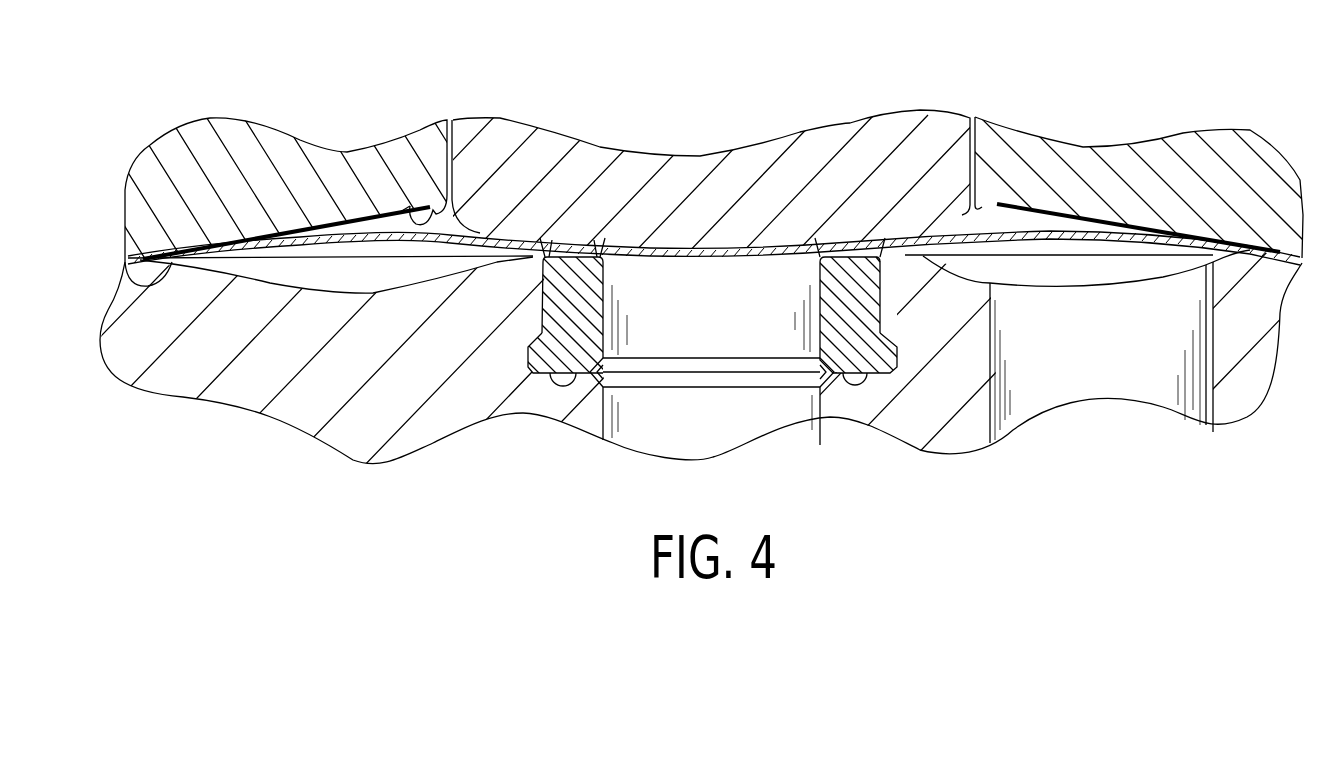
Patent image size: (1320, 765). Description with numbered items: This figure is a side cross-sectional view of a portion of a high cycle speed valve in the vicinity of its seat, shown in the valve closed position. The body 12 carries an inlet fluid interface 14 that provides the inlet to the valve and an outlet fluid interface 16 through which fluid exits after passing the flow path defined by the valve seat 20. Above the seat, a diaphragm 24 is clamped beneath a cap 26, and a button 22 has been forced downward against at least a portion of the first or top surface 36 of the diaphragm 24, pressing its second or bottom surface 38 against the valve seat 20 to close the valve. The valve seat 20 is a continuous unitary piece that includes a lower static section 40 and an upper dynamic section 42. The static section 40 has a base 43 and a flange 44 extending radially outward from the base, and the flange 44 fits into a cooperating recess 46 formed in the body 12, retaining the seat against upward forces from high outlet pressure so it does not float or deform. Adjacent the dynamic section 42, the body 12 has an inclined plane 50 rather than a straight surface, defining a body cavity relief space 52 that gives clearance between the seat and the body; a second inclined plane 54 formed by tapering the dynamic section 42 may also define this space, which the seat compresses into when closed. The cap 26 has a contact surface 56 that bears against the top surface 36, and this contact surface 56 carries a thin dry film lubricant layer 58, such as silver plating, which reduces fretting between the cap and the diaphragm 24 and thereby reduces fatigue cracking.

The body 12 is at (945, 442).
The inlet fluid interface 14 is at (640, 440).
The outlet fluid interface 16 is at (1162, 380).
The valve seat 20 is at (708, 331).
The button 22 is at (841, 120).
The diaphragm 24 is at (982, 205).
The cap 26 is at (168, 140).
The first (top) surface 36 is at (457, 200).
The second (bottom) surface 38 is at (497, 259).
The static section 40 is at (555, 357).
The dynamic section 42 is at (590, 269).
The base 43 is at (847, 360).
The flange 44 is at (885, 347).
The recess 46 is at (848, 357).
The inclined plane 50 is at (537, 268).
The body cavity relief space 52 is at (538, 258).
The second inclined plane 54 is at (884, 268).
The contact surface 56 is at (382, 200).
The dry film lubricant layer 58 is at (277, 232).